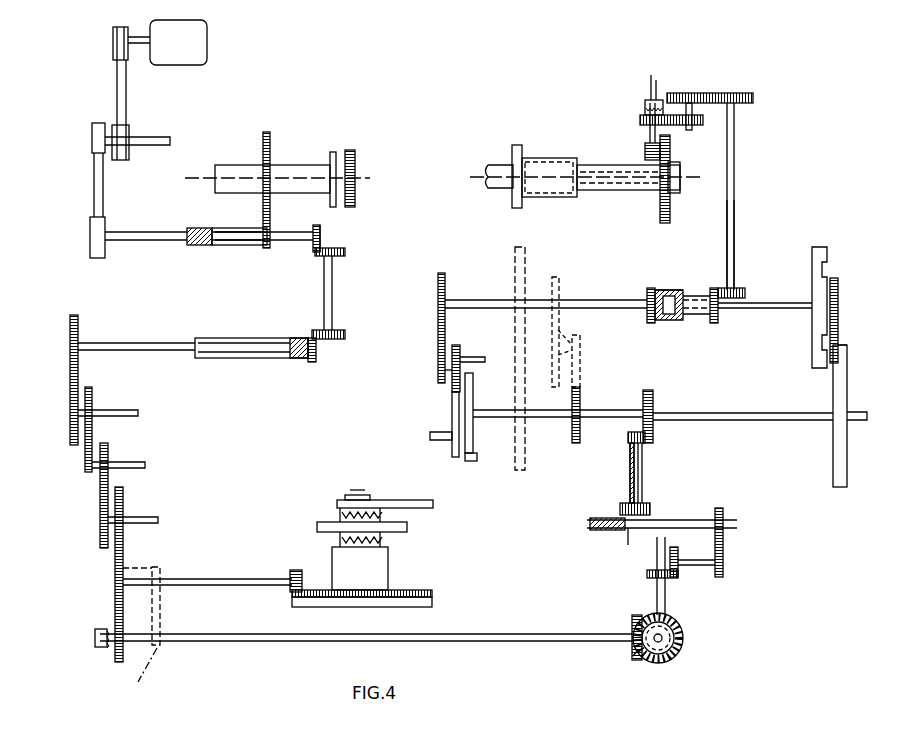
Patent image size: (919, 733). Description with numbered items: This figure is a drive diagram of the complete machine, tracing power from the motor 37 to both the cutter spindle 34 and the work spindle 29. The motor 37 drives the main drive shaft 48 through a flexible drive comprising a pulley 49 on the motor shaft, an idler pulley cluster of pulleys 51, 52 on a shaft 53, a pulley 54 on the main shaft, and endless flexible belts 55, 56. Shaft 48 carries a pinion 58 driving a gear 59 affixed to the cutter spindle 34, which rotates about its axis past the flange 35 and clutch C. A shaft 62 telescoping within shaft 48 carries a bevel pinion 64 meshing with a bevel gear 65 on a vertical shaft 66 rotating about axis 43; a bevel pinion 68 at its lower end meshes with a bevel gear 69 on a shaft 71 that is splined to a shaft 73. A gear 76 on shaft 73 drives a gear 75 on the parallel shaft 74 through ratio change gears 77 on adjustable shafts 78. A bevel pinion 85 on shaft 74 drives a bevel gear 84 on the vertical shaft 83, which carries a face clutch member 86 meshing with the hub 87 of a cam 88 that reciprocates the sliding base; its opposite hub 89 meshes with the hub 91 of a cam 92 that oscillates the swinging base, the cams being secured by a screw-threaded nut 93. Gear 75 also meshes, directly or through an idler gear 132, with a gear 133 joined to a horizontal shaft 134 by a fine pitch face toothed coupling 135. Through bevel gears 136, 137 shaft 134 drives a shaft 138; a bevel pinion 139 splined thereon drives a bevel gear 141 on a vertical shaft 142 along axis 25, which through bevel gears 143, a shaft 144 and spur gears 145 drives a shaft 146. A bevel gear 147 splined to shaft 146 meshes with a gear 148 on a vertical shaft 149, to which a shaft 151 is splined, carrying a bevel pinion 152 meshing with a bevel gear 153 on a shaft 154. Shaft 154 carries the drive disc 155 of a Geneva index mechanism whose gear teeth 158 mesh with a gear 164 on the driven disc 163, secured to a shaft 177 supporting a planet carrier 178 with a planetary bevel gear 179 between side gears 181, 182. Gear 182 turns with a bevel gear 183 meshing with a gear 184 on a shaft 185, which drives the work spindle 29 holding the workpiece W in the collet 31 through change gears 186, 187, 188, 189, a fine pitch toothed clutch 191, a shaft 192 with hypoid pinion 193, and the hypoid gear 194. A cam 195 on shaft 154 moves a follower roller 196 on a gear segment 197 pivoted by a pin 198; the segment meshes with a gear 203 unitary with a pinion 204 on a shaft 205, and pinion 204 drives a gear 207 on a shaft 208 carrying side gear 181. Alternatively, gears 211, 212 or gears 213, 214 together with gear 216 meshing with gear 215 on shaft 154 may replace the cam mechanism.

The motor 37 is at (191, 54).
The pulley 49 is at (113, 43).
The endless flexible belt 55 is at (127, 87).
The pulley 51 is at (128, 157).
The shaft 53 is at (168, 145).
The pulley 52 is at (90, 138).
The endless flexible belt 56 is at (94, 190).
The pulley 54 is at (88, 248).
The main drive shaft 48 is at (170, 244).
The pinion 58 is at (270, 246).
The shaft 62 is at (292, 232).
The gear 59 is at (263, 145).
The cutter spindle 34 is at (290, 170).
The flange 35 is at (309, 190).
The clutch C is at (353, 151).
The axis 43 is at (337, 241).
The bevel pinion 64 is at (320, 254).
The bevel gear 65 is at (339, 260).
The vertical shaft 66 is at (335, 302).
The bevel pinion 68 is at (344, 338).
The bevel gear 69 is at (322, 360).
The shaft 71 is at (245, 359).
The shaft 73 is at (155, 352).
The gear 76 is at (70, 364).
The ratio change gears 77 is at (100, 494).
The shafts 78 is at (138, 490).
The gear 75 is at (115, 586).
The shaft 74 is at (227, 578).
The idler gear 132 is at (160, 605).
The gear 133 is at (141, 670).
The horizontal shaft 134 is at (212, 641).
The fine pitch face toothed coupling 135 is at (104, 650).
The bevel pinion 85 is at (290, 570).
The bevel gear 84 is at (424, 602).
The vertical shaft 83 is at (378, 558).
The face clutch member 86 is at (340, 546).
The hub 87 is at (382, 537).
The cam 88 is at (316, 526).
The hub 89 is at (382, 516).
The hub 91 is at (336, 503).
The cam 92 is at (344, 496).
The screw-threaded nut 93 is at (367, 494).
The workpiece W is at (502, 165).
The collet 31 is at (548, 183).
The work spindle 29 is at (602, 169).
The hypoid gear 194 is at (670, 208).
The hypoid pinion 193 is at (645, 155).
The shaft 192 is at (650, 126).
The change gear 189 is at (642, 116).
The fine pitch toothed clutch 191 is at (654, 78).
The change gear 187 is at (702, 92).
The change gear 188 is at (702, 128).
The change gear 186 is at (735, 94).
The shaft 185 is at (736, 236).
The shaft 208 is at (509, 300).
The gear 207 is at (438, 304).
The gear 212 is at (525, 274).
The side gear 181 is at (649, 318).
The planet carrier 178 is at (666, 291).
The bevel gear 179 is at (658, 288).
The side gear 182 is at (684, 322).
The bevel gear 183 is at (716, 316).
The gear 184 is at (738, 290).
The shaft 177 is at (783, 308).
The driven disc 163 is at (814, 370).
The gear 164 is at (840, 308).
The gear teeth 158 is at (846, 340).
The drive disc 155 is at (847, 383).
The shaft 154 is at (718, 412).
The bevel gear 153 is at (656, 398).
The bevel pinion 152 is at (628, 440).
The shaft 151 is at (645, 450).
The vertical shaft 149 is at (643, 502).
The gear 148 is at (628, 504).
The bevel gear 147 is at (608, 531).
The shaft 146 is at (640, 530).
The spur gears 145 is at (717, 516).
The shaft 144 is at (700, 565).
The bevel gears 143 is at (650, 577).
The axis 25 is at (664, 598).
The vertical shaft 142 is at (634, 616).
The shaft 138 is at (683, 631).
The bevel gear 141 is at (672, 616).
The bevel pinion 139 is at (680, 641).
The bevel gear 137 is at (670, 656).
The bevel gear 136 is at (634, 654).
The gear 203 is at (458, 346).
The pinion 204 is at (438, 374).
The shaft 205 is at (482, 362).
The gear segment 197 is at (452, 412).
The follower roller 196 is at (474, 450).
The cam 195 is at (476, 458).
The pin 198 is at (438, 440).
The gear 211 is at (524, 424).
The gear 215 is at (572, 440).
The gear 213 is at (552, 368).
The gear 214 is at (562, 310).
The gear 216 is at (582, 352).